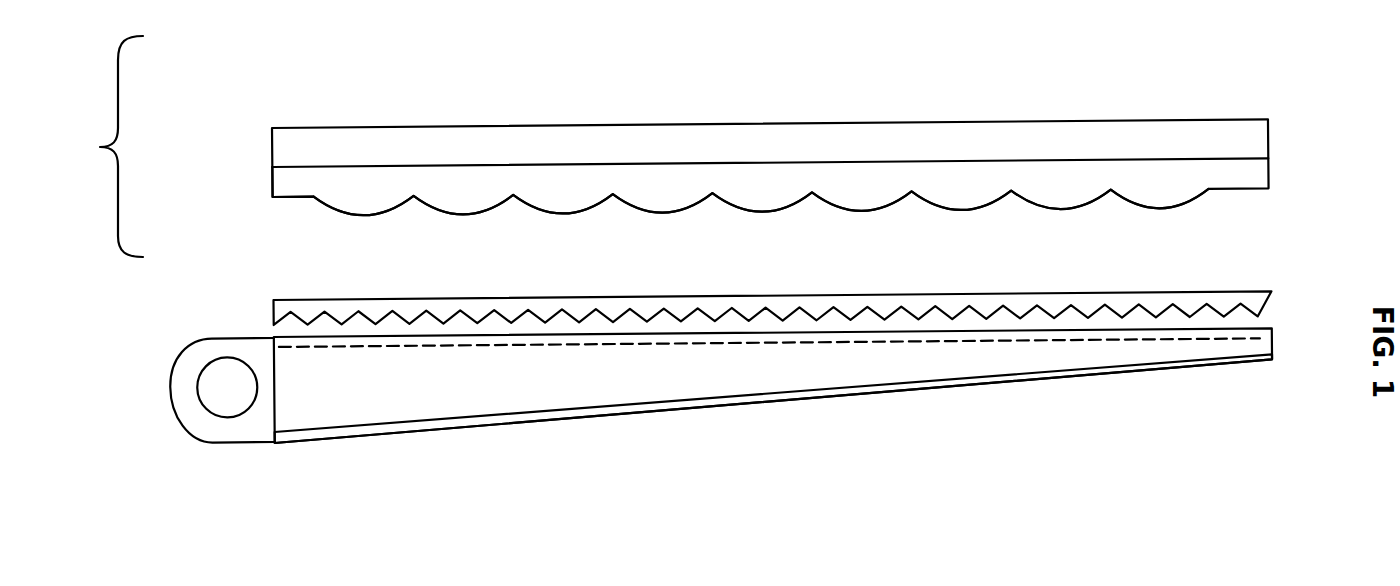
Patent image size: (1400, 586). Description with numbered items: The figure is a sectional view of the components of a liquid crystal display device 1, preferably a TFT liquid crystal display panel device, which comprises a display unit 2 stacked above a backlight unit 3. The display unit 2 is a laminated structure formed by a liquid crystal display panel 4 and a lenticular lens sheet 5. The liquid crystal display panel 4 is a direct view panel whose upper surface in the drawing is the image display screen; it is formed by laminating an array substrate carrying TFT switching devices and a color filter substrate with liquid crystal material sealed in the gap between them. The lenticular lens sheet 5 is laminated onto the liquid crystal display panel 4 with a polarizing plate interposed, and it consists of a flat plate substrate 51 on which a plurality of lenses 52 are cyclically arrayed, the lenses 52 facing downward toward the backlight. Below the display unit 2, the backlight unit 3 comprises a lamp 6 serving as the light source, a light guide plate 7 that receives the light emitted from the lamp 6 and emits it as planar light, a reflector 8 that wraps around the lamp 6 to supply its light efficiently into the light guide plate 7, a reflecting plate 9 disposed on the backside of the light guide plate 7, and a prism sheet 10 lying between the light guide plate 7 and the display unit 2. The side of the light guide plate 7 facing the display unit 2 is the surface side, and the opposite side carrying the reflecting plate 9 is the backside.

The liquid crystal display device 1 is at (99, 147).
The display unit 2 is at (216, 108).
The backlight unit 3 is at (218, 282).
The liquid crystal display panel 4 is at (568, 126).
The lenticular lens sheet 5 is at (639, 157).
The flat plate substrate 51 is at (272, 183).
The lenses 52 is at (337, 213).
The lamp 6 is at (203, 410).
The light guide plate 7 is at (1270, 329).
The reflector 8 is at (238, 443).
The reflecting plate 9 is at (1270, 359).
The prism sheet 10 is at (1270, 291).